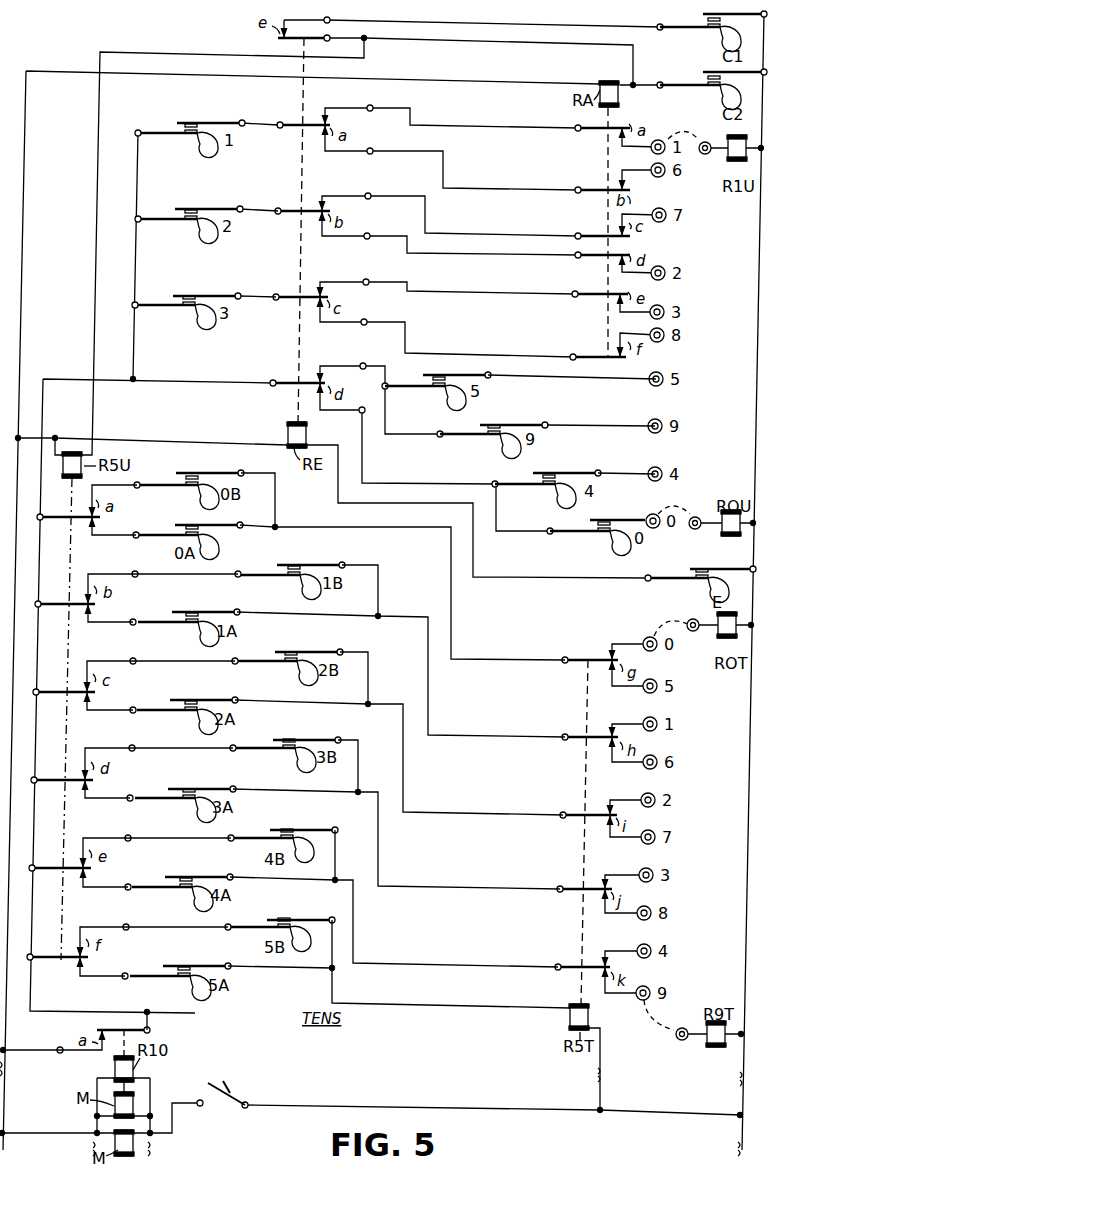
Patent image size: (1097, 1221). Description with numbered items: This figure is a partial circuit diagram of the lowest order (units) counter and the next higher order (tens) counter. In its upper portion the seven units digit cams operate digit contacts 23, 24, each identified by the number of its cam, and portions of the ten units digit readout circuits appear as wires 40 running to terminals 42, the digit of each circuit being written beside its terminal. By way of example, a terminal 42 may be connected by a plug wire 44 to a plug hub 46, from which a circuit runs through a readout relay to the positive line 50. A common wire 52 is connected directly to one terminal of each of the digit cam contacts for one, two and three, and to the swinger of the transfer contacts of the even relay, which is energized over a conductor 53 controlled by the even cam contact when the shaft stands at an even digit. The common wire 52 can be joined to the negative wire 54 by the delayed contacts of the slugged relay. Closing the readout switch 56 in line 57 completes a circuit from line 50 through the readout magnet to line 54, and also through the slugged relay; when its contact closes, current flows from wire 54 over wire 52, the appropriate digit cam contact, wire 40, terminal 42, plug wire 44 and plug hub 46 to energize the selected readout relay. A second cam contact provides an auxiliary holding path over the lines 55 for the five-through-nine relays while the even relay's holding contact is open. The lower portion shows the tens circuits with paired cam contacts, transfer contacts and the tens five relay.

The digit contact 23 is at (170, 138).
The digit contact 24 is at (228, 116).
The wire 40 is at (646, 164).
The terminal 42 is at (654, 180).
The plug wire 44 is at (688, 138).
The plug hub 46 is at (708, 146).
The positive line 50 is at (750, 312).
The common wire 52 is at (86, 382).
The conductor 53 is at (181, 446).
The negative wire 54 is at (438, 83).
The line 55 is at (230, 57).
The readout switch 56 is at (240, 1098).
The line 57 is at (434, 1110).